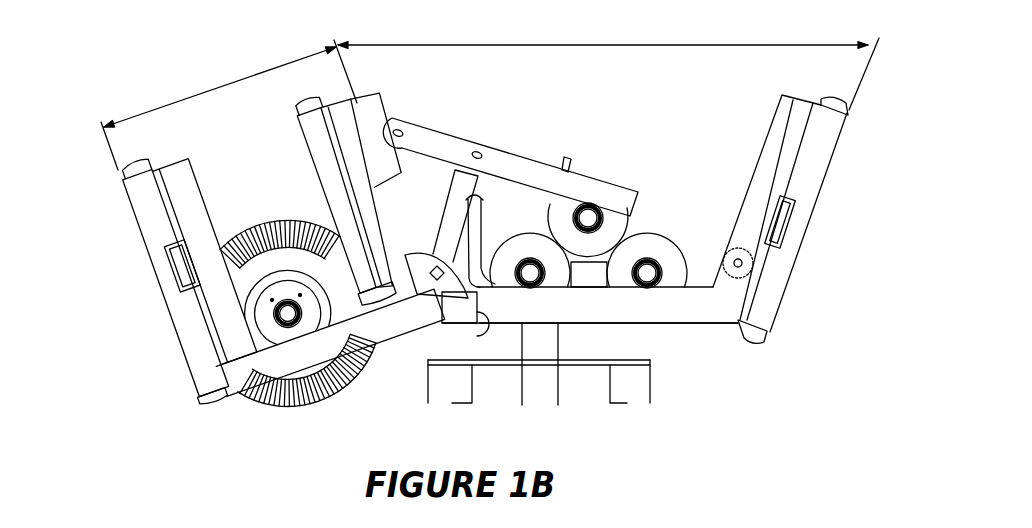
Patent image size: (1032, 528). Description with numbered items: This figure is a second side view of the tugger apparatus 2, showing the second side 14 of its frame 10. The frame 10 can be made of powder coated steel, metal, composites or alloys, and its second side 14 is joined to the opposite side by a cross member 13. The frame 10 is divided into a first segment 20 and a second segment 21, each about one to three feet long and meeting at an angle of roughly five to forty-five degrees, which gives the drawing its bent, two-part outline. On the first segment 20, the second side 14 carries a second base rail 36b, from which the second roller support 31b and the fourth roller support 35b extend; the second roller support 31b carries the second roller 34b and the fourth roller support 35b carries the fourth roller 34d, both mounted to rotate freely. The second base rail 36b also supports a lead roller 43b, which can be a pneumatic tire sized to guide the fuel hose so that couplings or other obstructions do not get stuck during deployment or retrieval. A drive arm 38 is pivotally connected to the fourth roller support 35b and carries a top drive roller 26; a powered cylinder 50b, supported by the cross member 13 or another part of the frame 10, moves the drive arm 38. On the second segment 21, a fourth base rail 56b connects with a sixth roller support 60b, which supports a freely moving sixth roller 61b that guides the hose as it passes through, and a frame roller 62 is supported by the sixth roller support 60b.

The apparatus 2 is at (88, 96).
The frame 10 is at (721, 326).
The cross member 13 is at (486, 336).
The second side 14 is at (617, 323).
The first segment 20 is at (229, 105).
The second segment 21 is at (608, 72).
The top drive roller 26 is at (552, 222).
The second roller support 31b is at (199, 190).
The second roller 34b is at (135, 213).
The fourth roller 34d is at (308, 150).
The fourth roller support 35b is at (347, 120).
The second base rail 36b is at (398, 336).
The drive arm 38 is at (619, 186).
The lead roller 43b is at (263, 222).
The powered cylinder 50b is at (447, 213).
The fourth base rail 56b is at (675, 327).
The sixth roller support 60b is at (762, 147).
The sixth roller 61b is at (829, 167).
The frame roller 62 is at (727, 247).